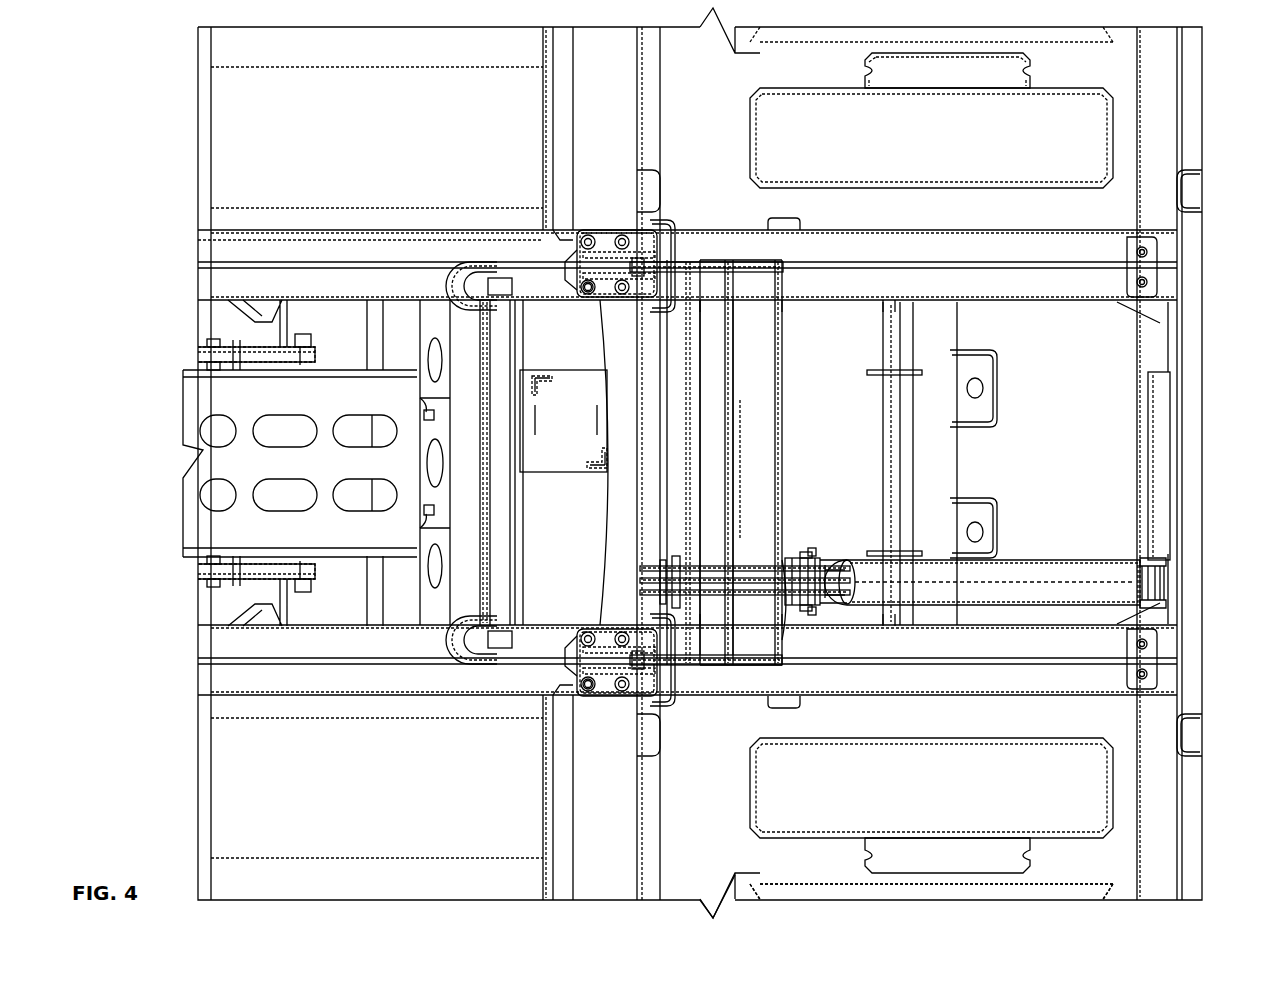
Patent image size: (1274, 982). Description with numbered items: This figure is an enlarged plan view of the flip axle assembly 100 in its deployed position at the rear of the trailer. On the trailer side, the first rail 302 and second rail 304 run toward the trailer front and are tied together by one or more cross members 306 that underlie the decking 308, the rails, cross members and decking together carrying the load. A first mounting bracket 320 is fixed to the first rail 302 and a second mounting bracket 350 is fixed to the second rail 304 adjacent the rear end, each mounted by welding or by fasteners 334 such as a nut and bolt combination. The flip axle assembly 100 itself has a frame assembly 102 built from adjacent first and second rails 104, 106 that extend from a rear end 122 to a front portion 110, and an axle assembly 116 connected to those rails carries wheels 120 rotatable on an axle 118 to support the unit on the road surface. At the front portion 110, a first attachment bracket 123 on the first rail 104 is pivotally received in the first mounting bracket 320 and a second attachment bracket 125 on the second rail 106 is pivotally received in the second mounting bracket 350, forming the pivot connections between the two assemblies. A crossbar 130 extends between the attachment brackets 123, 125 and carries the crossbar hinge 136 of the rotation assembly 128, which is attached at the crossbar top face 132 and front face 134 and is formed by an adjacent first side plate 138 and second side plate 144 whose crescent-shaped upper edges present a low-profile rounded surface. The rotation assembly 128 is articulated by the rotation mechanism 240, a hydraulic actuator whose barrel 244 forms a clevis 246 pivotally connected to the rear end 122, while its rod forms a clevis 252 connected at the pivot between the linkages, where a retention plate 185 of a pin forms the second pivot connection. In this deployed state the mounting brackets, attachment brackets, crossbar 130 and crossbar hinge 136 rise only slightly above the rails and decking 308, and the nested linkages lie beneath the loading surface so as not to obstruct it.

The flip axle assembly 100 is at (1224, 240).
The frame assembly 102 is at (1105, 318).
The first rail 104 is at (1032, 645).
The second rail 106 is at (1050, 290).
The front portion 110 is at (672, 150).
The axle assembly 116 is at (982, 444).
The axle 118 is at (940, 480).
The wheels 120 is at (1030, 178).
The rear end 122 is at (1203, 475).
The first attachment bracket 123 is at (723, 672).
The second attachment bracket 125 is at (692, 248).
The rotation assembly 128 is at (832, 548).
The crossbar 130 is at (793, 428).
The top face 132 is at (753, 372).
The front face 134 is at (718, 435).
The crossbar hinge 136 is at (747, 533).
The first side plate 138 is at (748, 608).
The second side plate 144 is at (748, 570).
The retention plate 185 is at (807, 557).
The rotation mechanism 240 is at (1012, 532).
The barrel 244 is at (1030, 570).
The clevis 246 is at (1157, 580).
The clevis 252 is at (810, 585).
The first rail 302 is at (338, 637).
The second rail 304 is at (350, 248).
The cross members 306 is at (470, 593).
The decking 308 is at (360, 137).
The first mounting bracket 320 is at (605, 705).
The fasteners 334 is at (590, 303).
The second mounting bracket 350 is at (593, 232).